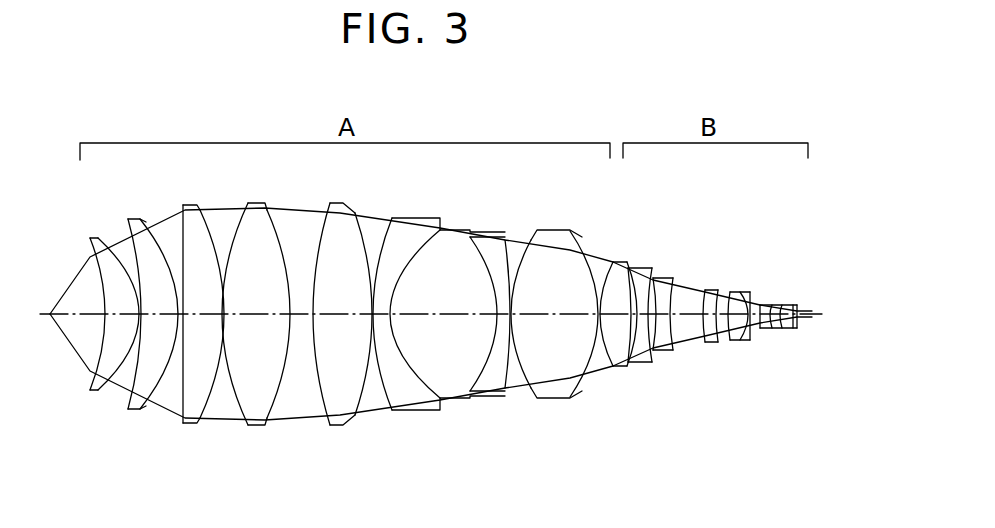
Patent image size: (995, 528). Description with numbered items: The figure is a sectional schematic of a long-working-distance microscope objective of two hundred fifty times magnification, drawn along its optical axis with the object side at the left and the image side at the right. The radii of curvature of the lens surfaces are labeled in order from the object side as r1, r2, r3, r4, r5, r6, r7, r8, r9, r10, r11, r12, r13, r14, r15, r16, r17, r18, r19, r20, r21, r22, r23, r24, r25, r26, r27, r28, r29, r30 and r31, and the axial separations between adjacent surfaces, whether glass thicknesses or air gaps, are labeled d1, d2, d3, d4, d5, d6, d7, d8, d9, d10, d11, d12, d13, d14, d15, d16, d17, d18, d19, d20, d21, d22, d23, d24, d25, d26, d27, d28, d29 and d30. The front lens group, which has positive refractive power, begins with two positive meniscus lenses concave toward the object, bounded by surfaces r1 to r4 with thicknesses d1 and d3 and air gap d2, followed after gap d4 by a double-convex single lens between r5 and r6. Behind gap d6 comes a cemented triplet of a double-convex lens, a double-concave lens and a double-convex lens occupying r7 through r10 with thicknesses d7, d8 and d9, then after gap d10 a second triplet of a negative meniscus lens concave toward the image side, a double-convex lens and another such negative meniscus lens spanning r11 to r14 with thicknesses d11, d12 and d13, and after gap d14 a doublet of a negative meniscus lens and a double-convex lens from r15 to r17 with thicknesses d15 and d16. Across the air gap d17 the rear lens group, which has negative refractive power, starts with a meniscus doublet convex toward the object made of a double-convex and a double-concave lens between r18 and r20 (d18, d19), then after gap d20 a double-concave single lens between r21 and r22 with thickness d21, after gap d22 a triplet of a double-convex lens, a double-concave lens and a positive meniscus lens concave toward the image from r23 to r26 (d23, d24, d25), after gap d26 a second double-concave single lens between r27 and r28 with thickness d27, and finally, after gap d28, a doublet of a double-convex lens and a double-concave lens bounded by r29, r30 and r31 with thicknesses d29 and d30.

The radius of curvature of lens surface r1 is at (90, 257).
The radius of curvature of lens surface r2 is at (100, 240).
The radius of curvature of lens surface r3 is at (128, 230).
The radius of curvature of lens surface r4 is at (146, 218).
The radius of curvature of lens surface r5 is at (183, 208).
The radius of curvature of lens surface r6 is at (201, 212).
The radius of curvature of lens surface r7 is at (248, 206).
The radius of curvature of lens surface r8 is at (268, 212).
The radius of curvature of lens surface r9 is at (331, 206).
The radius of curvature of lens surface r10 is at (356, 214).
The radius of curvature of lens surface r11 is at (393, 218).
The radius of curvature of lens surface r12 is at (432, 230).
The radius of curvature of lens surface r13 is at (470, 232).
The radius of curvature of lens surface r14 is at (508, 238).
The radius of curvature of lens surface r15 is at (526, 238).
The radius of curvature of lens surface r16 is at (562, 240).
The radius of curvature of lens surface r17 is at (590, 250).
The radius of curvature of lens surface r18 is at (615, 263).
The radius of curvature of lens surface r19 is at (634, 272).
The radius of curvature of lens surface r20 is at (652, 272).
The radius of curvature of lens surface r21 is at (656, 281).
The radius of curvature of lens surface r22 is at (674, 281).
The radius of curvature of lens surface r23 is at (705, 291).
The radius of curvature of lens surface r24 is at (717, 290).
The radius of curvature of lens surface r25 is at (732, 293).
The radius of curvature of lens surface r26 is at (752, 300).
The radius of curvature of lens surface r27 is at (763, 305).
The radius of curvature of lens surface r28 is at (774, 305).
The radius of curvature of lens surface r29 is at (784, 305).
The radius of curvature of lens surface r30 is at (795, 304).
The radius of curvature of lens surface r31 is at (799, 322).
The separation between adjacent lens surfaces d1 is at (118, 320).
The separation between adjacent lens surfaces d2 is at (142, 320).
The separation between adjacent lens surfaces d3 is at (160, 320).
The separation between adjacent lens surfaces d4 is at (181, 320).
The separation between adjacent lens surfaces d5 is at (203, 320).
The separation between adjacent lens surfaces d6 is at (223, 320).
The separation between adjacent lens surfaces d7 is at (256, 320).
The separation between adjacent lens surfaces d8 is at (301, 320).
The separation between adjacent lens surfaces d9 is at (342, 320).
The separation between adjacent lens surfaces d10 is at (372, 320).
The separation between adjacent lens surfaces d11 is at (382, 320).
The separation between adjacent lens surfaces d12 is at (443, 320).
The separation between adjacent lens surfaces d13 is at (503, 320).
The separation between adjacent lens surfaces d14 is at (511, 320).
The separation between adjacent lens surfaces d15 is at (555, 320).
The separation between adjacent lens surfaces d16 is at (599, 320).
The separation between adjacent lens surfaces d17 is at (618, 320).
The separation between adjacent lens surfaces d18 is at (630, 320).
The separation between adjacent lens surfaces d19 is at (640, 320).
The separation between adjacent lens surfaces d20 is at (653, 320).
The separation between adjacent lens surfaces d21 is at (663, 320).
The separation between adjacent lens surfaces d22 is at (689, 322).
The separation between adjacent lens surfaces d23 is at (711, 322).
The separation between adjacent lens surfaces d24 is at (724, 322).
The separation between adjacent lens surfaces d25 is at (740, 322).
The separation between adjacent lens surfaces d26 is at (755, 330).
The separation between adjacent lens surfaces d27 is at (766, 328).
The separation between adjacent lens surfaces d28 is at (777, 328).
The separation between adjacent lens surfaces d29 is at (788, 328).
The separation between adjacent lens surfaces d30 is at (795, 326).